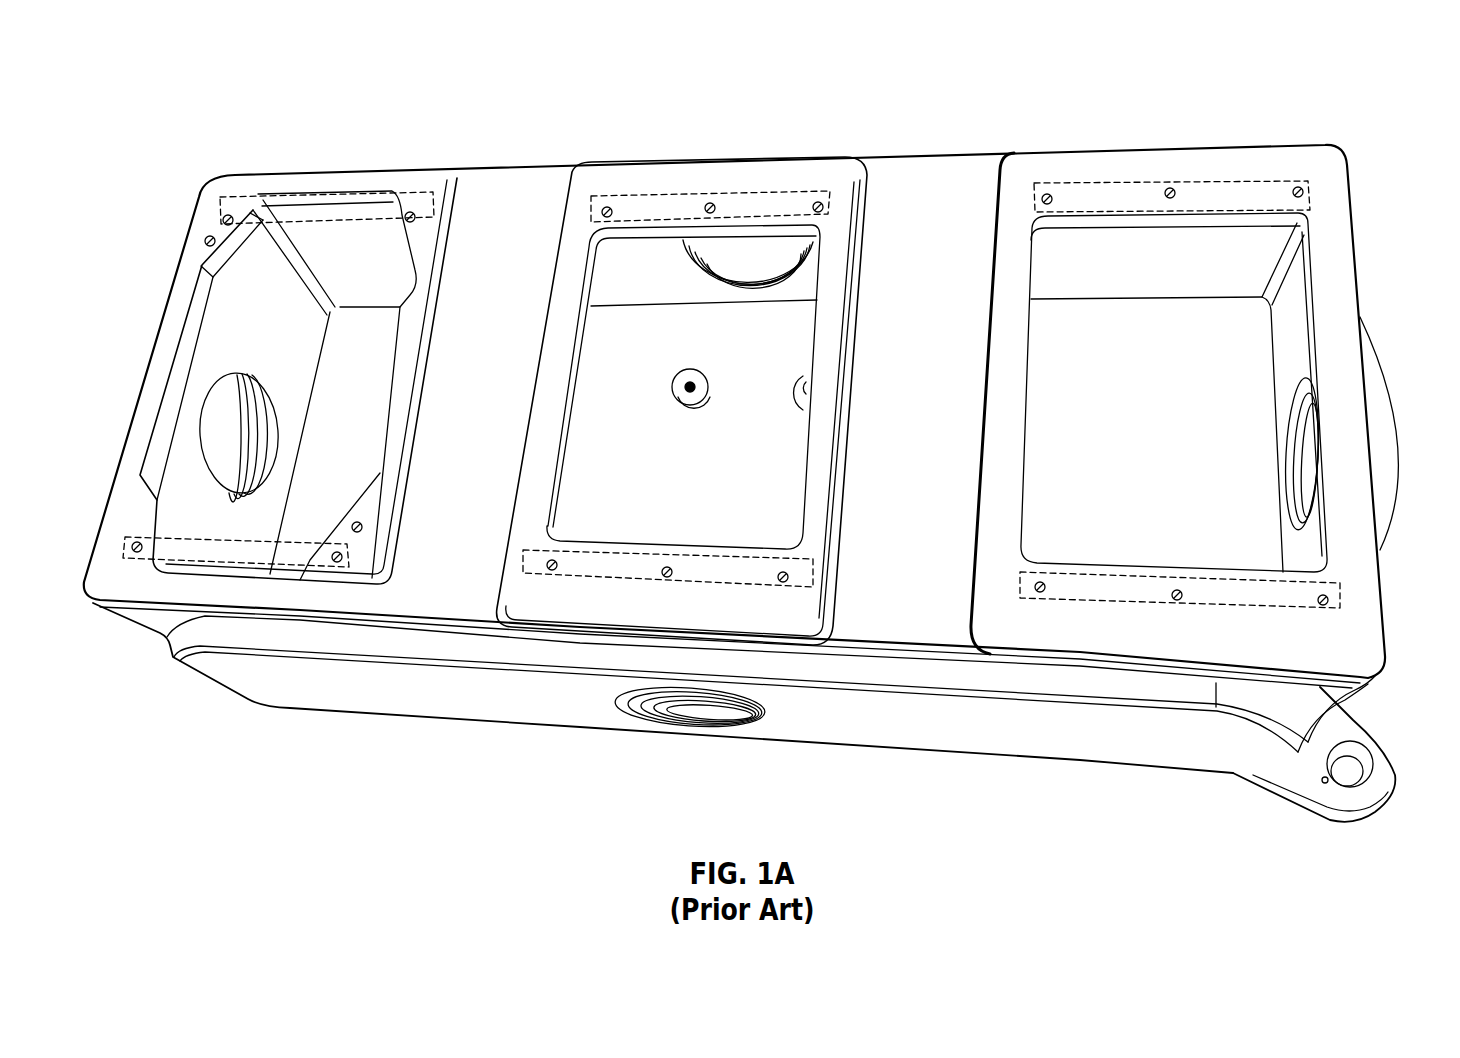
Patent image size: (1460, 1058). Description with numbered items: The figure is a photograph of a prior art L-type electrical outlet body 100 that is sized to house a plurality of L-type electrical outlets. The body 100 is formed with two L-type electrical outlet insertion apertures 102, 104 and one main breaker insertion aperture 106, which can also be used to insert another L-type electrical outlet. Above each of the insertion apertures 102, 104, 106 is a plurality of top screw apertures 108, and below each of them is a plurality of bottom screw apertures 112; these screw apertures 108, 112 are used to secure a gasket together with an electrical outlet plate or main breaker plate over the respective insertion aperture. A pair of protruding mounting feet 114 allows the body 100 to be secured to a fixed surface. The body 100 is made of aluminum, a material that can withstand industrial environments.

The body 100 is at (193, 106).
The L-type electrical outlet insertion aperture 102 is at (683, 327).
The L-type electrical outlet insertion aperture 104 is at (1212, 327).
The main breaker insertion aperture 106 is at (340, 322).
The top screw apertures 108 is at (327, 193).
The bottom screw apertures 112 is at (220, 562).
The protruding mounting feet 114 is at (1372, 740).